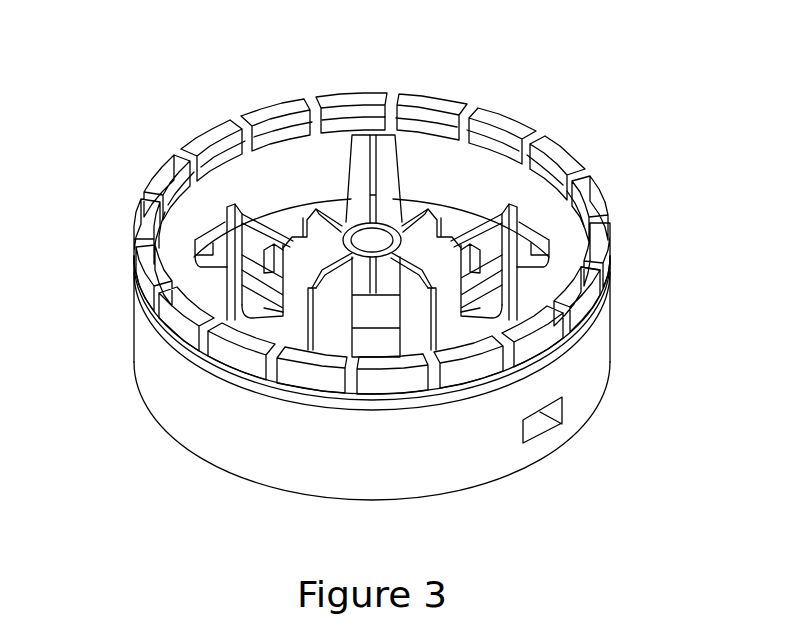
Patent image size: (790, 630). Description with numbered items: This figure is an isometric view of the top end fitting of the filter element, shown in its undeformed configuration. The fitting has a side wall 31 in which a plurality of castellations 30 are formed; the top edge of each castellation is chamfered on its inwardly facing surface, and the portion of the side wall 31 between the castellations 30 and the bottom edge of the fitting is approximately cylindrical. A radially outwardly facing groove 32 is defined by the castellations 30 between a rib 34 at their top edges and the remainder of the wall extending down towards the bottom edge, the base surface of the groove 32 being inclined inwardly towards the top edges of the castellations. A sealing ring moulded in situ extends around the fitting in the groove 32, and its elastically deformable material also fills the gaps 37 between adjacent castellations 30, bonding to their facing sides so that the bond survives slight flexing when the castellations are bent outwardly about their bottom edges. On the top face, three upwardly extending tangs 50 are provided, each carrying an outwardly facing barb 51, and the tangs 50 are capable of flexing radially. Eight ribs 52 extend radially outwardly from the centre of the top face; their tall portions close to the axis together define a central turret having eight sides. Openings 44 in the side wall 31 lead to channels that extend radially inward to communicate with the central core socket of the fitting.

The castellations 30 is at (372, 200).
The side wall 31 is at (136, 348).
The groove 32 is at (578, 307).
The rib 34 is at (597, 273).
The gaps 37 is at (392, 97).
The openings 44 is at (543, 420).
The tangs 50 is at (216, 260).
The barb 51 is at (215, 221).
The ribs 52 is at (327, 318).